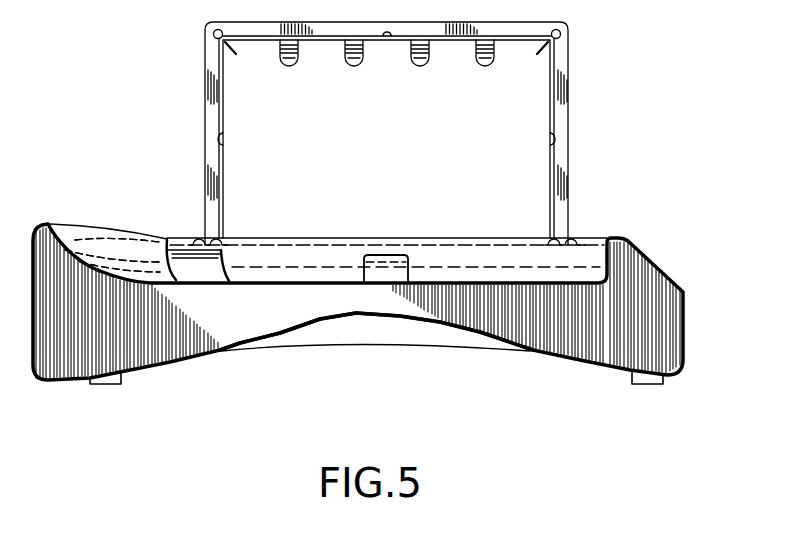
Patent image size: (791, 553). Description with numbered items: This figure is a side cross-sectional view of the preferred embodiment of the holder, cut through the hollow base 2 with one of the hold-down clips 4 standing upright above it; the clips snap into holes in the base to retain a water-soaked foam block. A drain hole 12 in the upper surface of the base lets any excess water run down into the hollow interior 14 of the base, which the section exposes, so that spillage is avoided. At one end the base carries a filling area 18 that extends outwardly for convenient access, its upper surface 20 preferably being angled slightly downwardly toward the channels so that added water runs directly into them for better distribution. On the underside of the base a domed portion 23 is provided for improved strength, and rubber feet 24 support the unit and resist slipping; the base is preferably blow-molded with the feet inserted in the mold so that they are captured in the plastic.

The hollow base 2 is at (633, 257).
The hold-down clip 4 is at (567, 72).
The drain hole 12 is at (386, 255).
The hollow interior 14 is at (662, 320).
The filling area 18 is at (76, 245).
The upper surface of the filling area 20 is at (113, 255).
The domed portion 23 is at (375, 328).
The rubber feet 24 is at (644, 386).